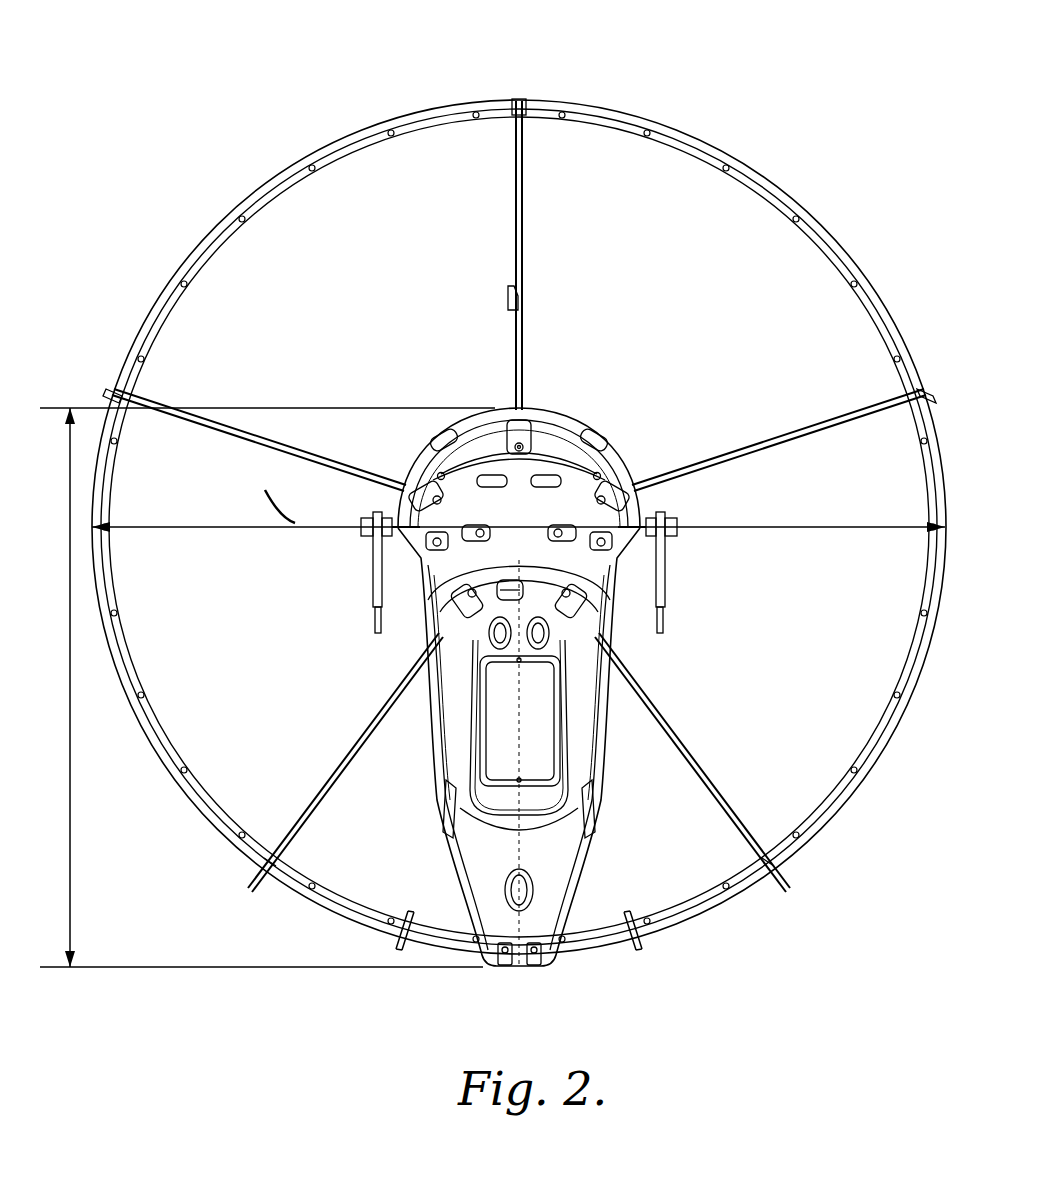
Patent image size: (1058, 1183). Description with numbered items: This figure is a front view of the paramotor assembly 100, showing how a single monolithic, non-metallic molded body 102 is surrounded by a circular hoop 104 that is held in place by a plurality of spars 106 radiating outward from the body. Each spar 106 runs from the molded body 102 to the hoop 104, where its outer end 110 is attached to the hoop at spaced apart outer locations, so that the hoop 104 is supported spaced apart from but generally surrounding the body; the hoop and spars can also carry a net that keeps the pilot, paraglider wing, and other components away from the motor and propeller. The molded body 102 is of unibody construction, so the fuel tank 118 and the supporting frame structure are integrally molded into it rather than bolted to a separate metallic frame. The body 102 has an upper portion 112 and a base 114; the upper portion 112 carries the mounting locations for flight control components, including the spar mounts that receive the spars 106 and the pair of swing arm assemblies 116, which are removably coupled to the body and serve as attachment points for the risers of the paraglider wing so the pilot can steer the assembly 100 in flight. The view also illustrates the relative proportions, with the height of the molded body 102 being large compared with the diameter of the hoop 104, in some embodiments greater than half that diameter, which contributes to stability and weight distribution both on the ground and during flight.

The paramotor assembly 100 is at (305, 62).
The molded body 102 is at (545, 847).
The hoop 104 is at (608, 108).
The spars 106 is at (517, 215).
The outer end 110 is at (519, 100).
The upper portion 112 is at (540, 495).
The base 114 is at (520, 968).
The swing arm assemblies 116 is at (375, 565).
The fuel tank 118 is at (447, 790).